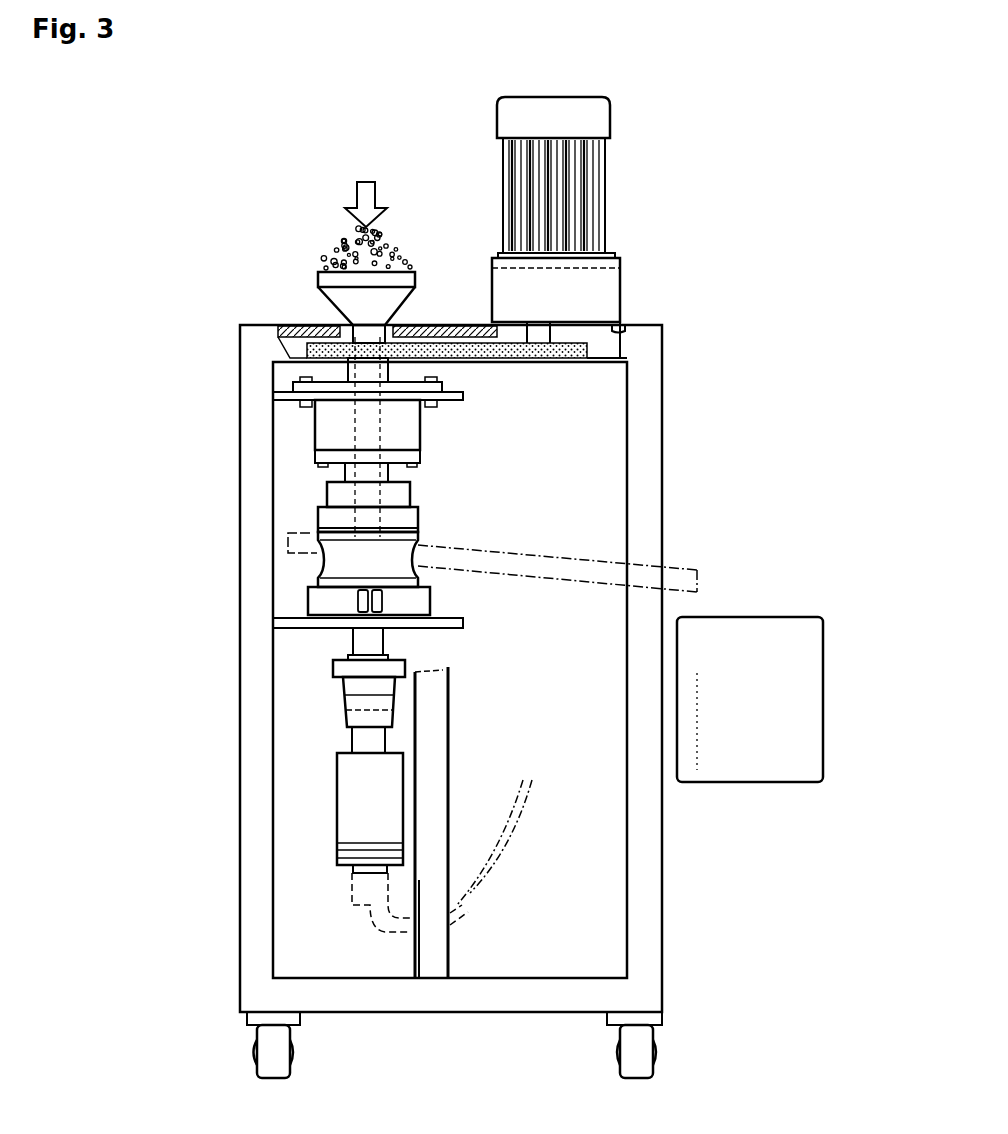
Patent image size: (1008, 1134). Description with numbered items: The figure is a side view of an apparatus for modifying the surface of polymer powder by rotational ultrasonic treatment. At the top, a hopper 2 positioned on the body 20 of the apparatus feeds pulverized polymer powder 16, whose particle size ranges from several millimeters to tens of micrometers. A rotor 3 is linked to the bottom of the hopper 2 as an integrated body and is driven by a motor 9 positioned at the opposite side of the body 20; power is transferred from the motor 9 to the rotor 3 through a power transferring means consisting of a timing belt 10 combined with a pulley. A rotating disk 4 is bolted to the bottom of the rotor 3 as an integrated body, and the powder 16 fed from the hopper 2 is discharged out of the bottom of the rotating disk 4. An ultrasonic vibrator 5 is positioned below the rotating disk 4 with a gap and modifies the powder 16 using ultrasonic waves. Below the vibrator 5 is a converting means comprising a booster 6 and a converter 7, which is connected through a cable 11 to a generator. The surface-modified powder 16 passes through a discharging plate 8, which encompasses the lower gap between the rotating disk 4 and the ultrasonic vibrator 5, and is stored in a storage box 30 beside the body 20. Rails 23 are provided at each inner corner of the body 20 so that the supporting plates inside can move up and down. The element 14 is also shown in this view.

The hopper 2 is at (317, 282).
The rotor 3 is at (312, 438).
The rotating disk 4 is at (317, 512).
The ultrasonic vibrator 5 is at (323, 565).
The booster 6 is at (340, 700).
The converter 7 is at (357, 797).
The discharging plate 8 is at (563, 558).
The motor 9 is at (583, 187).
The timing belt 10 is at (545, 362).
The cable 11 is at (507, 845).
The coupling block 14 is at (330, 490).
The polymer powder 16 is at (323, 227).
The body 20 is at (258, 882).
The rails 23 is at (452, 728).
The storage box 30 is at (785, 613).